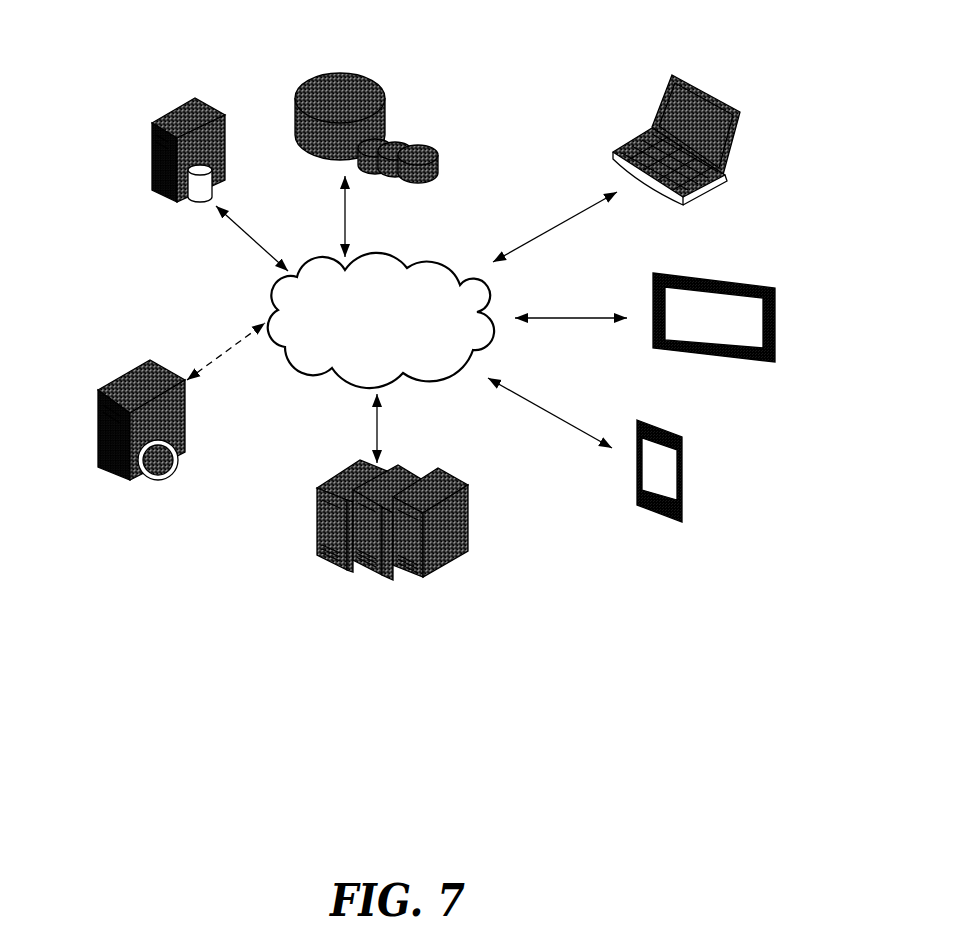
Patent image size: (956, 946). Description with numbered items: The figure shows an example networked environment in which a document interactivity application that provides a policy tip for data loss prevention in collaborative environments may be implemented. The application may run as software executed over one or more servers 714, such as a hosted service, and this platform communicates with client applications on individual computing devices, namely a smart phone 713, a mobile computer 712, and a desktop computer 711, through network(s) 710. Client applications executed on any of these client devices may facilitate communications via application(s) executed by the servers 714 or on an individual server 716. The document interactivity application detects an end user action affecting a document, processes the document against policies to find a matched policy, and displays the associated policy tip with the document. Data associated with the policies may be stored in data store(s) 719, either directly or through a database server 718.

The network(s) 710 is at (384, 241).
The desktop computer 711 is at (713, 73).
The mobile computer 712 is at (749, 257).
The smart phone 713 is at (689, 435).
The servers 714 is at (344, 466).
The individual server 716 is at (119, 371).
The database server 718 is at (190, 214).
The data store(s) 719 is at (355, 50).